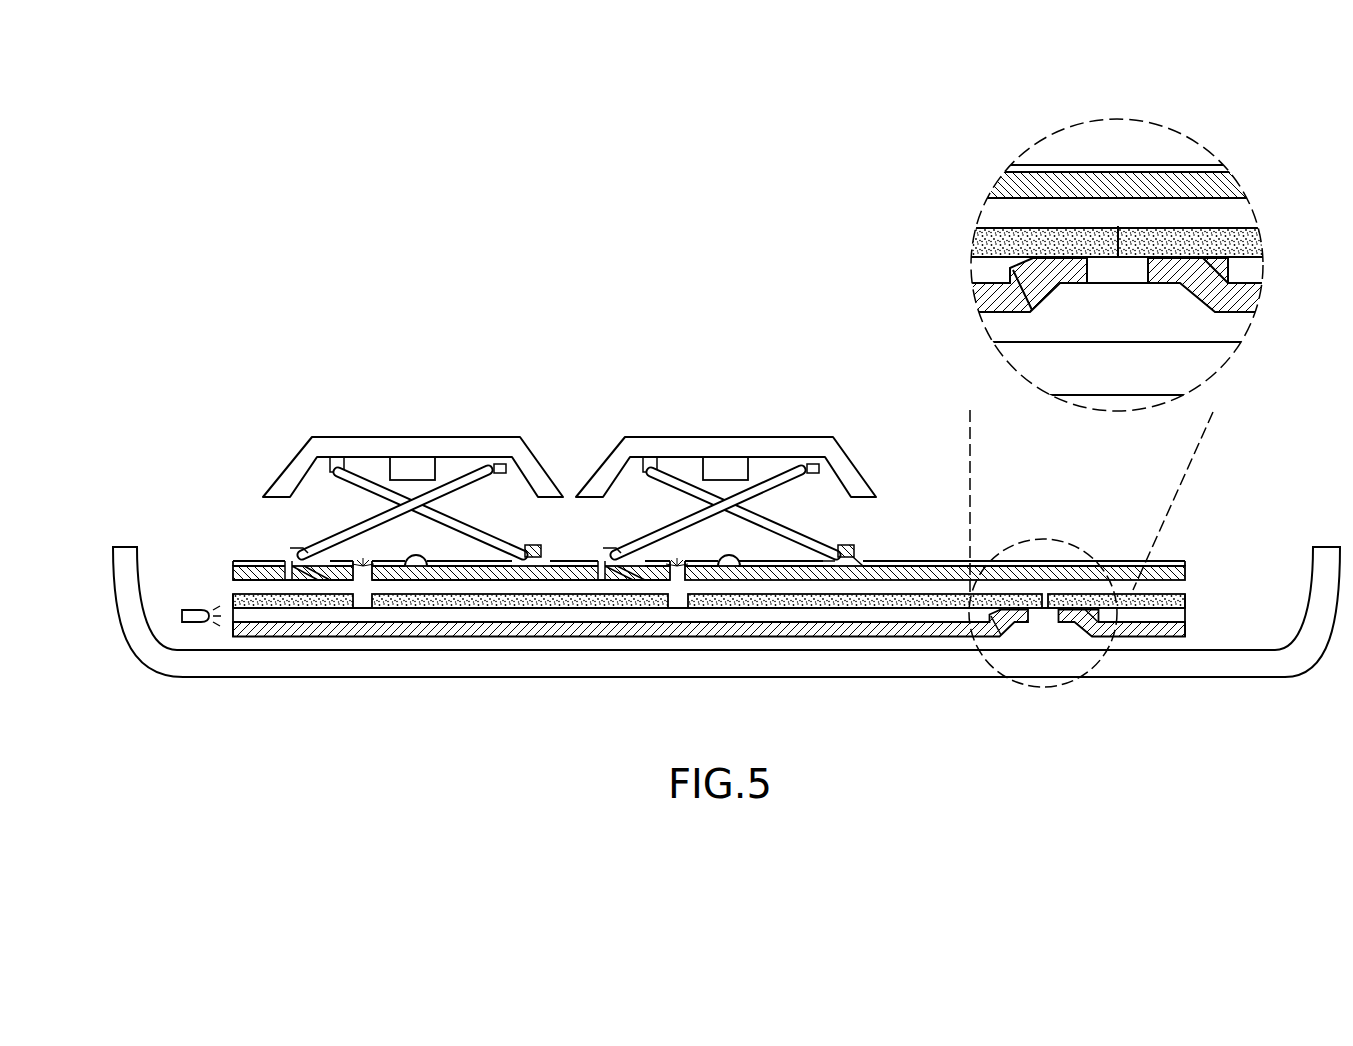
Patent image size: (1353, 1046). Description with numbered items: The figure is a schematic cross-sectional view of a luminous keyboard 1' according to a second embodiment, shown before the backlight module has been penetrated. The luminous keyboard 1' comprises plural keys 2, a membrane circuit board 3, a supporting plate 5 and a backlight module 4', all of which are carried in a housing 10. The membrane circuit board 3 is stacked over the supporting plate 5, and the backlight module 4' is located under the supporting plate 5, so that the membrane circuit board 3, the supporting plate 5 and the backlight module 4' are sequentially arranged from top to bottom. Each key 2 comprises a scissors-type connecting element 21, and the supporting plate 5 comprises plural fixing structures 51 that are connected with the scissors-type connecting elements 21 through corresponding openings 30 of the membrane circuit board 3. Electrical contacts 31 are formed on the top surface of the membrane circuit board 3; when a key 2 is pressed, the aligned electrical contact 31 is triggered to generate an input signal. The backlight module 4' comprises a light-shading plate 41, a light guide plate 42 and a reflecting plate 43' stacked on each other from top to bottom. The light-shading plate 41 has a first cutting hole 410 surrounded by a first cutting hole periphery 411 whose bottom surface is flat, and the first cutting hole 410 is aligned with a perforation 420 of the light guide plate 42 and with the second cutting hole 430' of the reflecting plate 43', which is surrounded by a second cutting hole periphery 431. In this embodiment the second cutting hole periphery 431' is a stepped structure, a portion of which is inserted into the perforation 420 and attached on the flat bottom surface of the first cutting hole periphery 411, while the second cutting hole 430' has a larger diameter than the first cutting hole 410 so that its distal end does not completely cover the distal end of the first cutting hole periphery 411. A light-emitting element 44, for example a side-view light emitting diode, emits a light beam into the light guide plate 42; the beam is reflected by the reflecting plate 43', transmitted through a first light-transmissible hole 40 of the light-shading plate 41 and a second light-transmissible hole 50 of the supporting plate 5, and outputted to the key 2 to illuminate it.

The luminous keyboard 1' is at (413, 428).
The key 2 is at (682, 440).
The membrane circuit board 3 is at (262, 563).
The backlight module 4' is at (192, 424).
The supporting plate 5 is at (1177, 562).
The housing base 10 is at (257, 665).
The scissors-type connecting element 21 is at (682, 525).
The opening 30 is at (600, 560).
The electrical contact 31 is at (730, 552).
The first light-transmissible hole 40 is at (684, 608).
The light-shading plate 41 is at (1177, 592).
The light guide plate 42 is at (1170, 615).
The reflecting plate 43' is at (769, 494).
The light-emitting element 44 is at (182, 616).
The second light-transmissible hole 50 is at (672, 585).
The fixing structure 51 is at (617, 552).
The first cutting hole 410 is at (1125, 214).
The first cutting hole periphery 411 is at (1077, 238).
The perforation 420 is at (1004, 276).
The second cutting hole 430' is at (1078, 295).
The second cutting hole periphery 431 is at (983, 223).
The second cutting hole periphery 431' is at (1174, 302).